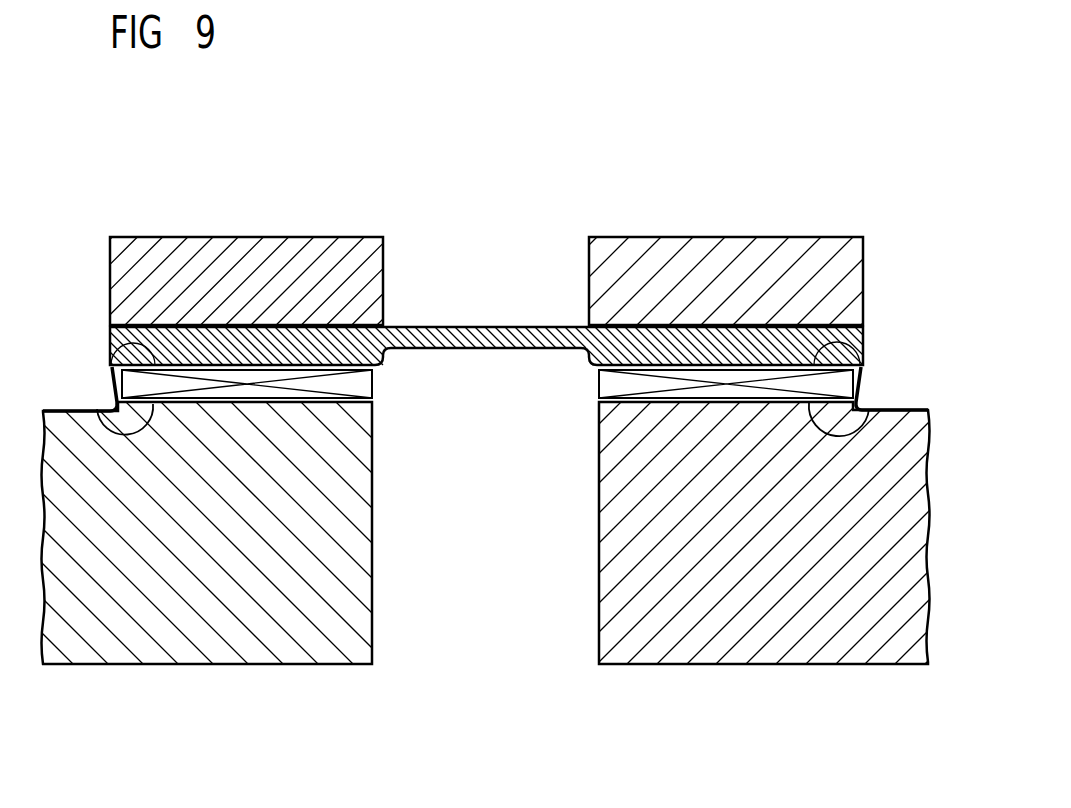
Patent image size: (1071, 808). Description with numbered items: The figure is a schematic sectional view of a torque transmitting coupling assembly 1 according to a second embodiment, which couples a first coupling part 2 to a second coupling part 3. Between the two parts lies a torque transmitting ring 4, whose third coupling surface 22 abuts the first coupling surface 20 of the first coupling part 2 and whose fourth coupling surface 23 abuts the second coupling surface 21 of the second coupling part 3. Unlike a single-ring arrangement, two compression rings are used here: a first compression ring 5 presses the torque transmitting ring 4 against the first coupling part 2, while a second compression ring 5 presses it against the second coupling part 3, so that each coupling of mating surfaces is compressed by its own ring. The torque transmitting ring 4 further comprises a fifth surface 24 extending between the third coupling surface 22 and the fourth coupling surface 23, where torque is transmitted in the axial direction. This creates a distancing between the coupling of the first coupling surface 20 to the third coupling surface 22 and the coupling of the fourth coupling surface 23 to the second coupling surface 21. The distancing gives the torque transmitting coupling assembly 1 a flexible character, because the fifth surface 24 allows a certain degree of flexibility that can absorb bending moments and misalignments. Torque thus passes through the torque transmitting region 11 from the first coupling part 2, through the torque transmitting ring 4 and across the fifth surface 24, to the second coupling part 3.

The torque transmitting coupling assembly 1 is at (828, 205).
The first coupling part 2 is at (201, 628).
The second coupling part 3 is at (762, 628).
The torque transmitting ring 4 is at (301, 347).
The compression ring 5 is at (192, 255).
The torque transmitting region 11 is at (484, 252).
The first coupling surface 20 is at (100, 409).
The second coupling surface 21 is at (878, 410).
The third coupling surface 22 is at (112, 342).
The fourth coupling surface 23 is at (813, 347).
The fifth surface 24 is at (475, 349).